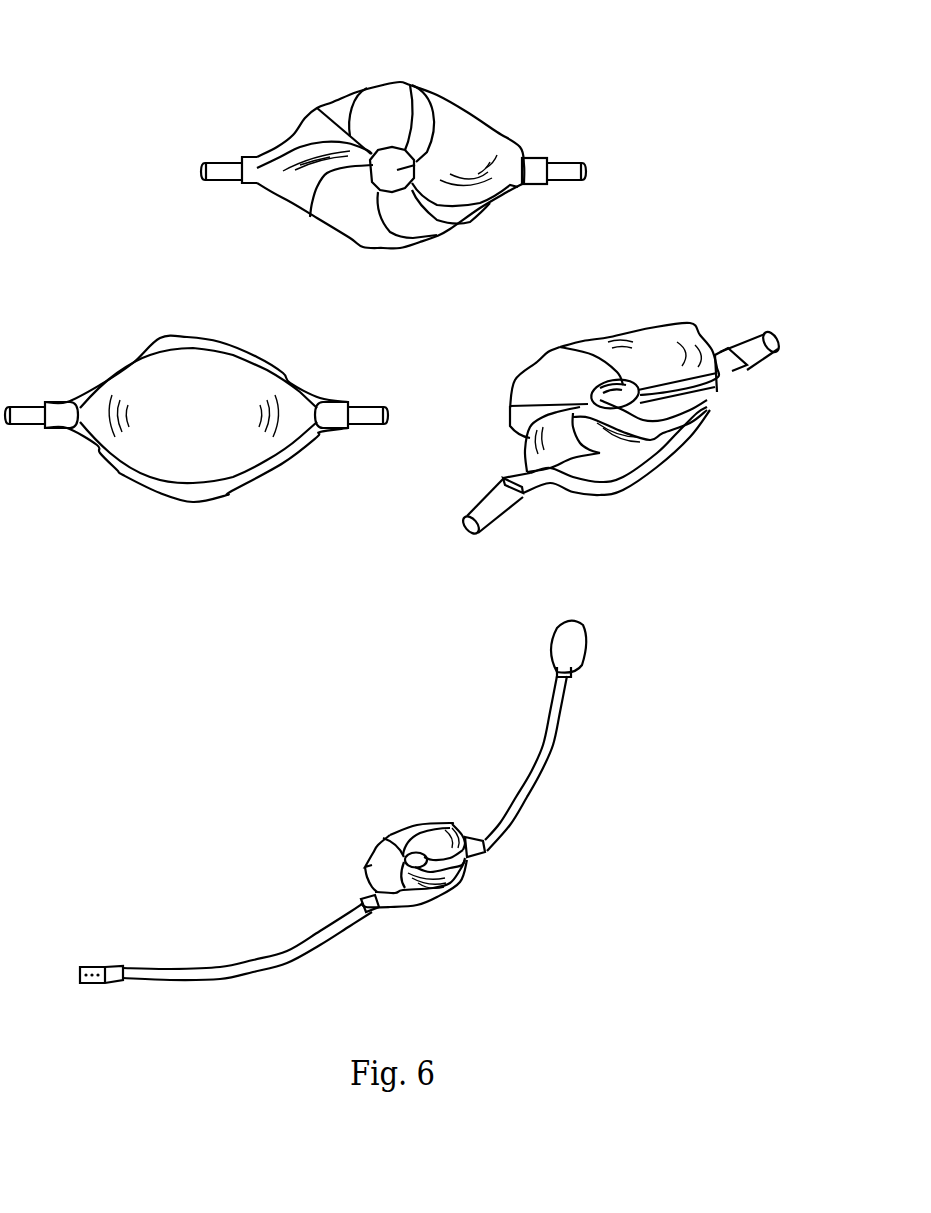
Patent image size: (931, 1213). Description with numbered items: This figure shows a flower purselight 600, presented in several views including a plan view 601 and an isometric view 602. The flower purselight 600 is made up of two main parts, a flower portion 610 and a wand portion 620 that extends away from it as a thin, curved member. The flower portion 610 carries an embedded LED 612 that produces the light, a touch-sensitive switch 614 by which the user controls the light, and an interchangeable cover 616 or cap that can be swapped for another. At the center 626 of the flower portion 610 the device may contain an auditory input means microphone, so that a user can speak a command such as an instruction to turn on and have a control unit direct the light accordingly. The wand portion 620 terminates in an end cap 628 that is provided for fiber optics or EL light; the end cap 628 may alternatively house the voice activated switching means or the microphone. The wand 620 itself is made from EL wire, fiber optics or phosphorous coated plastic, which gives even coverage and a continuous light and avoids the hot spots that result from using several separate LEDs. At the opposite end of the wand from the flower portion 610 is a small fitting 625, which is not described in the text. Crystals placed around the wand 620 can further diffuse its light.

The flower purselight 600 is at (465, 737).
The plan view 601 is at (303, 93).
The isometric view 602 is at (634, 500).
The flower portion 610 is at (430, 905).
The embedded LED 612 is at (380, 842).
The touch-sensitive switch 614 is at (453, 885).
The interchangeable cover 616 is at (430, 827).
The wand portion 620 is at (547, 770).
The proximal connector 625 is at (93, 965).
The center 626 is at (417, 163).
The end cap 628 is at (577, 643).